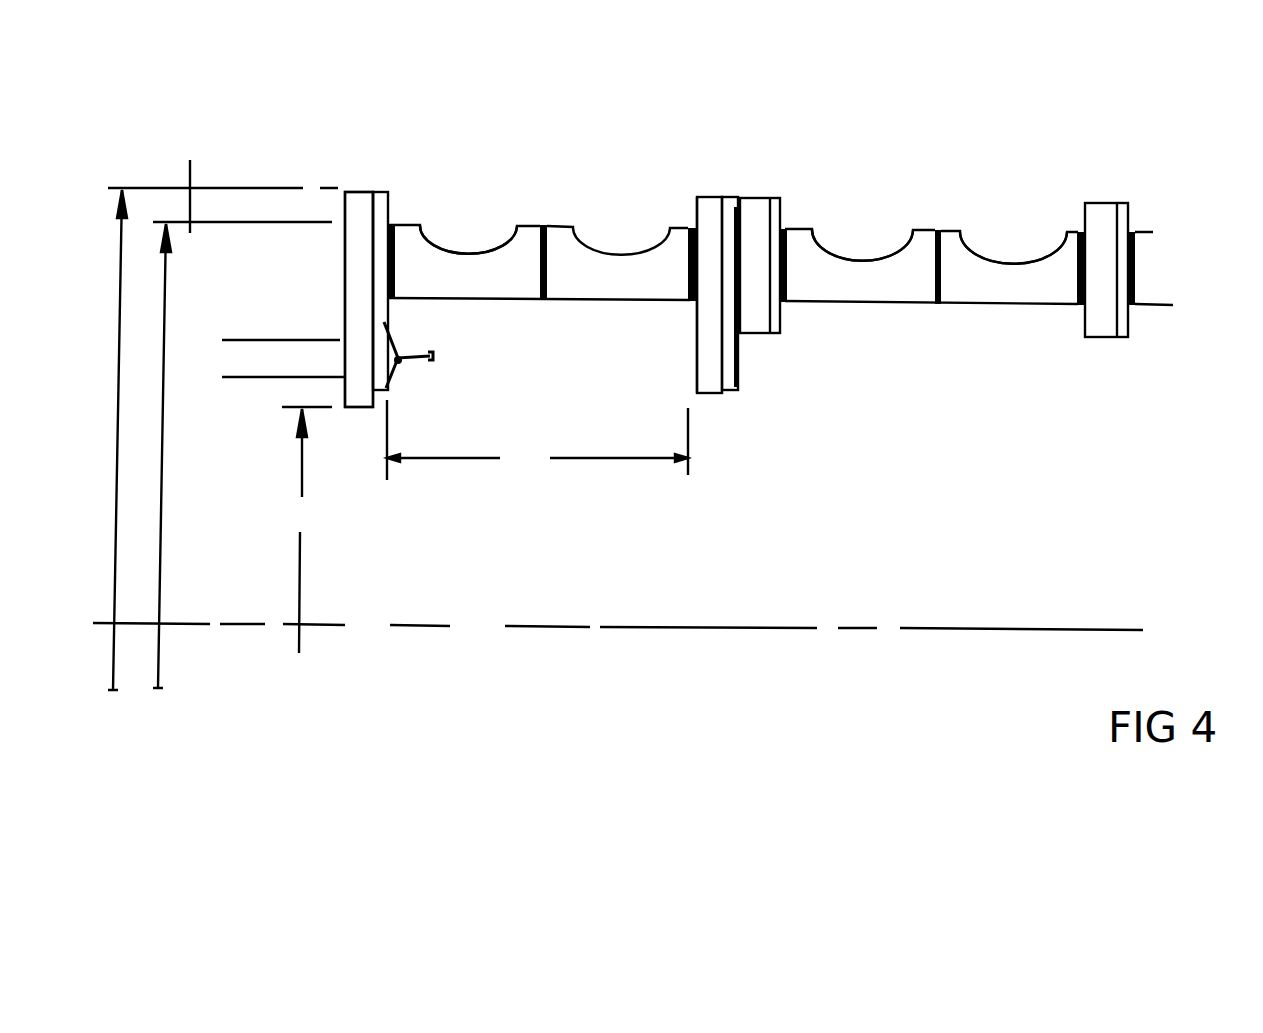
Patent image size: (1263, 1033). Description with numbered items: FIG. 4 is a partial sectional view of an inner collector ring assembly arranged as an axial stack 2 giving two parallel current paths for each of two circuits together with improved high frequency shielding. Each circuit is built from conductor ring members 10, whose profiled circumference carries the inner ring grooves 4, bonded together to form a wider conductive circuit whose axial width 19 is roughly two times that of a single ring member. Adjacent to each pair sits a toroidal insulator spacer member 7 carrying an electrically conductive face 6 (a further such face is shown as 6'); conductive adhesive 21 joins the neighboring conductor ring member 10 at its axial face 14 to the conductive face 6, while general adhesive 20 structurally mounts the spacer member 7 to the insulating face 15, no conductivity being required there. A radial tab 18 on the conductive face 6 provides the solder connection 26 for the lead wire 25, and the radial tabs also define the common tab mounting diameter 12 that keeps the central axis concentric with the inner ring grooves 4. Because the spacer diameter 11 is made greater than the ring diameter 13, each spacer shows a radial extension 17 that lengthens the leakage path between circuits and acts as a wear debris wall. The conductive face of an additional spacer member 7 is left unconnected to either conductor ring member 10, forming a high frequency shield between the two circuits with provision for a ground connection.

The axial stack 2 is at (342, 90).
The inner ring grooves 4 is at (500, 245).
The conductive face 6 is at (795, 285).
The flange plate 6' is at (408, 239).
The spacer member 7 is at (358, 222).
The conductor ring member 10 is at (637, 287).
The spacer diameter 11 is at (365, 193).
The common tab mounting diameter 12 is at (303, 530).
The ring diameter 13 is at (235, 455).
The axial face 14 is at (395, 272).
The insulating face 15 is at (690, 362).
The radial extension 17 is at (190, 228).
The radial tab 18 is at (358, 395).
The axial width of conductive circuit 19 is at (537, 440).
The general adhesive 20 is at (1077, 307).
The conductive adhesive 21 is at (785, 303).
The lead wire 25 is at (277, 365).
The solder connection 26 is at (398, 360).